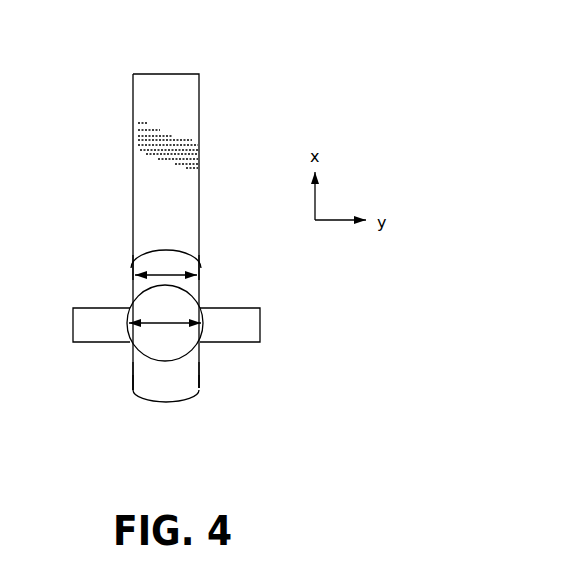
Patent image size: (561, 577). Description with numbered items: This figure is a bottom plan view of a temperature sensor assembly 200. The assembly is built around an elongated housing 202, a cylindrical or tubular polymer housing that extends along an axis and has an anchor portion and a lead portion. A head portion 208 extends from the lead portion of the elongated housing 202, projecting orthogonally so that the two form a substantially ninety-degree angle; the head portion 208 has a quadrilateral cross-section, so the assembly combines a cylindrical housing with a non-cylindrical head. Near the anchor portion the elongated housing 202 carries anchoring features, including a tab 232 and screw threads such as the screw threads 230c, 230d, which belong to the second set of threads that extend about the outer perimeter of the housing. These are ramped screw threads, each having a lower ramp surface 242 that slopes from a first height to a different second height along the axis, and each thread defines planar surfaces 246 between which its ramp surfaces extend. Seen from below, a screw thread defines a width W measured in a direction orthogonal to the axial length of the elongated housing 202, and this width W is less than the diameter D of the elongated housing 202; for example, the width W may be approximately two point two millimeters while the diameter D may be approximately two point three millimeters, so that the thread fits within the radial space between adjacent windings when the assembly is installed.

The temperature sensor assembly 200 is at (257, 57).
The elongated housing 202 is at (200, 365).
The head portion 208 is at (132, 152).
The screw thread 230c is at (156, 245).
The screw thread 230d is at (166, 402).
The tab 232 is at (85, 305).
The lower ramp surface 242 is at (143, 365).
The planar surface 246 is at (132, 267).
The width W is at (165, 275).
The diameter D is at (167, 322).